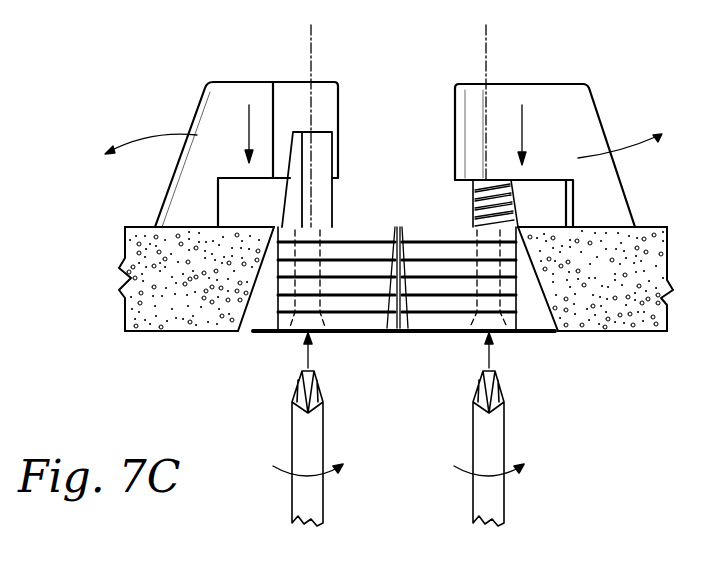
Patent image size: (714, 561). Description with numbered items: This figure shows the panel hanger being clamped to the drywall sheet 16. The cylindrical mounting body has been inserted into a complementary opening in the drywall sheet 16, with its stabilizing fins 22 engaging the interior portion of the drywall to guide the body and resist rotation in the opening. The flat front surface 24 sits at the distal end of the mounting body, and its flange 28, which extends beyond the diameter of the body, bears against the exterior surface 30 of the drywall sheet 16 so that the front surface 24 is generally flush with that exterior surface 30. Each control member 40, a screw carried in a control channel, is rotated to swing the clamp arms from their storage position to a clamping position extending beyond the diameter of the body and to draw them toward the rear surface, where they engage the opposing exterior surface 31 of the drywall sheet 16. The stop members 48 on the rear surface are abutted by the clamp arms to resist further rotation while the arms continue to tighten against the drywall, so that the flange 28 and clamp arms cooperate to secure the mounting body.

The drywall sheet 16 is at (359, 298).
The opposite exterior surface of drywall sheet 31 is at (142, 227).
The exterior surface of drywall sheet 30 is at (190, 331).
The stabilizing fins 22 is at (400, 308).
The front surface 24 is at (358, 327).
The control member 40 is at (476, 253).
The stop members 48 is at (325, 175).
The flange 28 is at (540, 331).